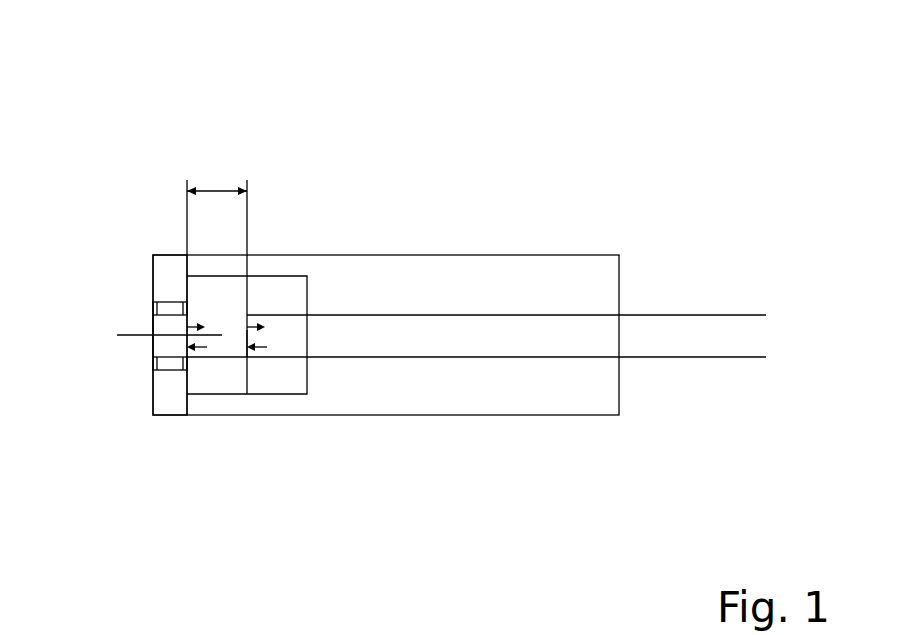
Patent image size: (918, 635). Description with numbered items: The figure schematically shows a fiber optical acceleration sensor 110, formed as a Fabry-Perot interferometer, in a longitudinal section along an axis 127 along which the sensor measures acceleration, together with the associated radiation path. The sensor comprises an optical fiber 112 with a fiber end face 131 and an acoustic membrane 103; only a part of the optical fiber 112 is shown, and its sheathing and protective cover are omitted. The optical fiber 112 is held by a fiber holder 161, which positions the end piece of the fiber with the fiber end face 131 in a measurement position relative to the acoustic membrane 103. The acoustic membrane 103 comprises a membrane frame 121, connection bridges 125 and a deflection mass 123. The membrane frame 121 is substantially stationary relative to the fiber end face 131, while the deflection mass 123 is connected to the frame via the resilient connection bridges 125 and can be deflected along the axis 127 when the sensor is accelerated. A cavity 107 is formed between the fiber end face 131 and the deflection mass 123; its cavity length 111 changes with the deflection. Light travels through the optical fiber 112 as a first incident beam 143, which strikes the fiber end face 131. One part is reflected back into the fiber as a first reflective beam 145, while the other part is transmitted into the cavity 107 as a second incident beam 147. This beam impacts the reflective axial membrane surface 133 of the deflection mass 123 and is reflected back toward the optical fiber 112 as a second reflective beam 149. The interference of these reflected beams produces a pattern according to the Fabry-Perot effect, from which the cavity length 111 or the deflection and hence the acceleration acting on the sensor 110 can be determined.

The fiber optical acceleration sensor 110 is at (156, 90).
The fiber holder 161 is at (512, 255).
The acoustic membrane 103 is at (144, 420).
The cavity length 111 is at (207, 190).
The cavity 107 is at (242, 301).
The optical fiber 112 is at (736, 314).
The membrane frame 121 is at (153, 260).
The connection bridges 125 is at (158, 302).
The axis 127 is at (135, 337).
The deflection mass 123 is at (150, 346).
The second reflective beam 149 is at (193, 322).
The first reflective beam 145 is at (252, 324).
The axial membrane surface 133 is at (195, 352).
The first incident beam 143 is at (268, 350).
The second incident beam 147 is at (206, 359).
The fiber end face 131 is at (246, 352).